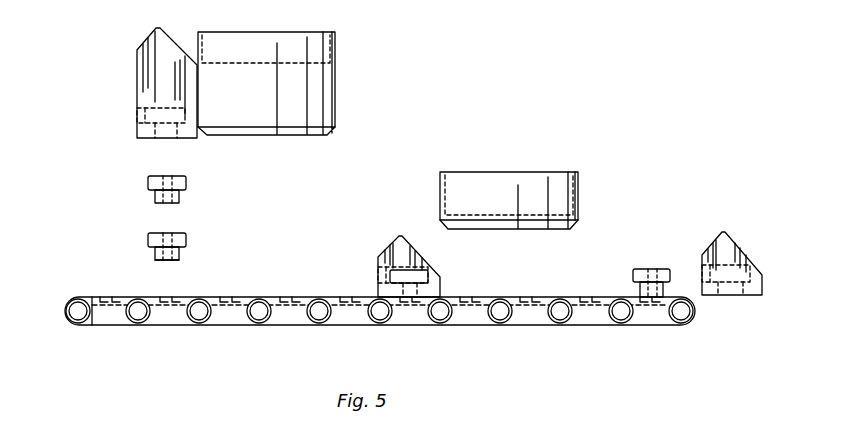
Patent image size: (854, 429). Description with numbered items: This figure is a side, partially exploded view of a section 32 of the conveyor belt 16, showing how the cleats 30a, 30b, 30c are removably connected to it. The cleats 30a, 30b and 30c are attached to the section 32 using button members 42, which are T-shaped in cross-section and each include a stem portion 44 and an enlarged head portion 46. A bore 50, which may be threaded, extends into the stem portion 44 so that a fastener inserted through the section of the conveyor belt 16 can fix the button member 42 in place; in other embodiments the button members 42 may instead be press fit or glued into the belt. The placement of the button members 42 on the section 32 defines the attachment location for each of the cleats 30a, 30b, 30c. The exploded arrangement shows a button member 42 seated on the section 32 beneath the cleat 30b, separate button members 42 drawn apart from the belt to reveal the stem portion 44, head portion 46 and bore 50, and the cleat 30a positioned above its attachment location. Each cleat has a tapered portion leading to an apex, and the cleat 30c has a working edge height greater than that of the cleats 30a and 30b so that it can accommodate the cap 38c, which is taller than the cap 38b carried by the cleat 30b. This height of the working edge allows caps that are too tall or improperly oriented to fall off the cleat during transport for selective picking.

The cleat 30a is at (703, 230).
The cleat 30b is at (380, 238).
The cleat 30c is at (130, 75).
The cap 38b is at (487, 188).
The cap 38c is at (305, 89).
The button member 42 is at (366, 221).
The stem portion 44 is at (180, 255).
The enlarged head portion 46 is at (188, 182).
The bore 50 is at (165, 260).
The section 32 is at (380, 337).
The conveyor belt 16 is at (283, 320).